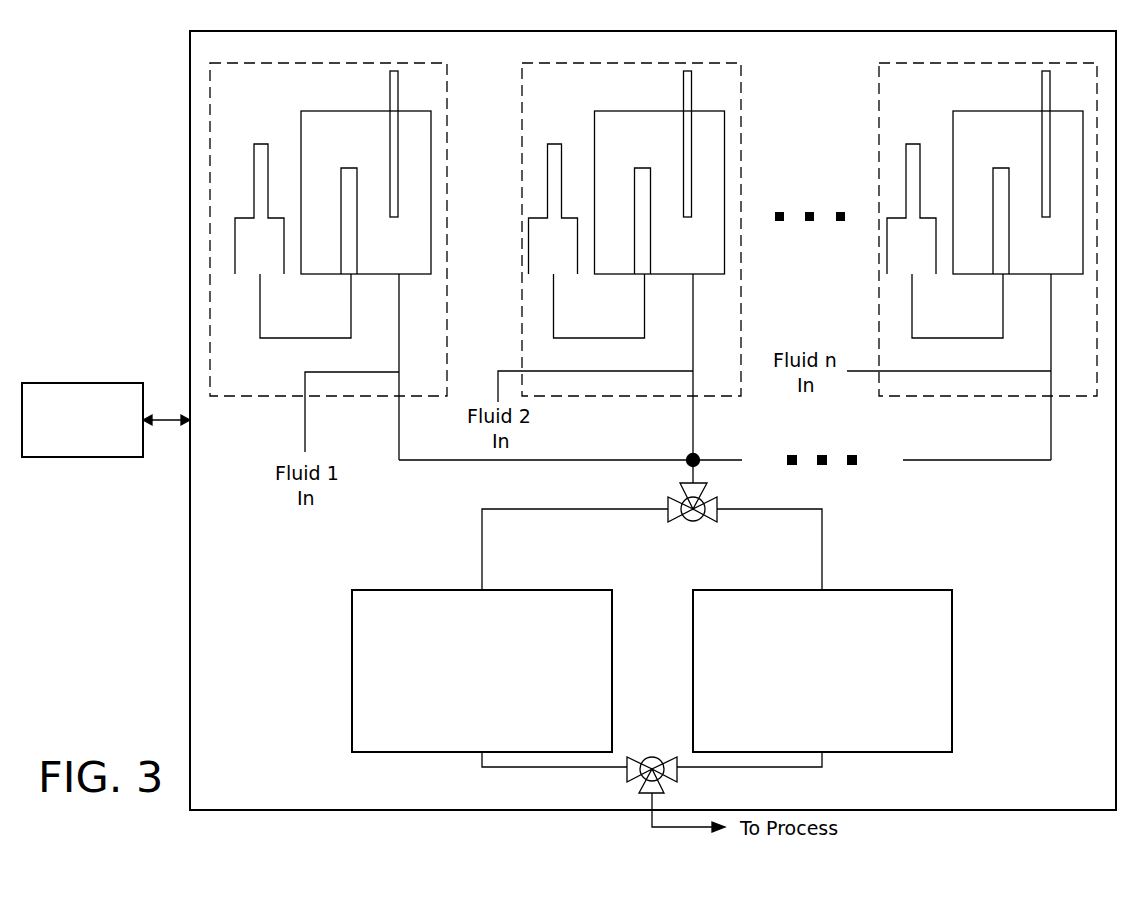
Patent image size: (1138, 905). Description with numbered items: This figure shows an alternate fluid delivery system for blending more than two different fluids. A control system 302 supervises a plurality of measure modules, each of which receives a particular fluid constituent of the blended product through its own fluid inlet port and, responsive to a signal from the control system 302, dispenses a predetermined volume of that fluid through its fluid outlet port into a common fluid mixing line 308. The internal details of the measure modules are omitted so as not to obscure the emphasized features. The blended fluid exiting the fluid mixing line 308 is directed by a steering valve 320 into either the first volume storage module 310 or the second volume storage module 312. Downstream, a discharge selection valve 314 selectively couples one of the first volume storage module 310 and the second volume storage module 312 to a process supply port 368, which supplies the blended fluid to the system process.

The control system 302 is at (62, 383).
The fluid mixing line 308 is at (695, 468).
The steering valve 320 is at (717, 518).
The first volume storage module 310 is at (382, 588).
The second volume storage module 312 is at (887, 588).
The discharge selection valve 314 is at (678, 773).
The process supply port 368 is at (650, 817).